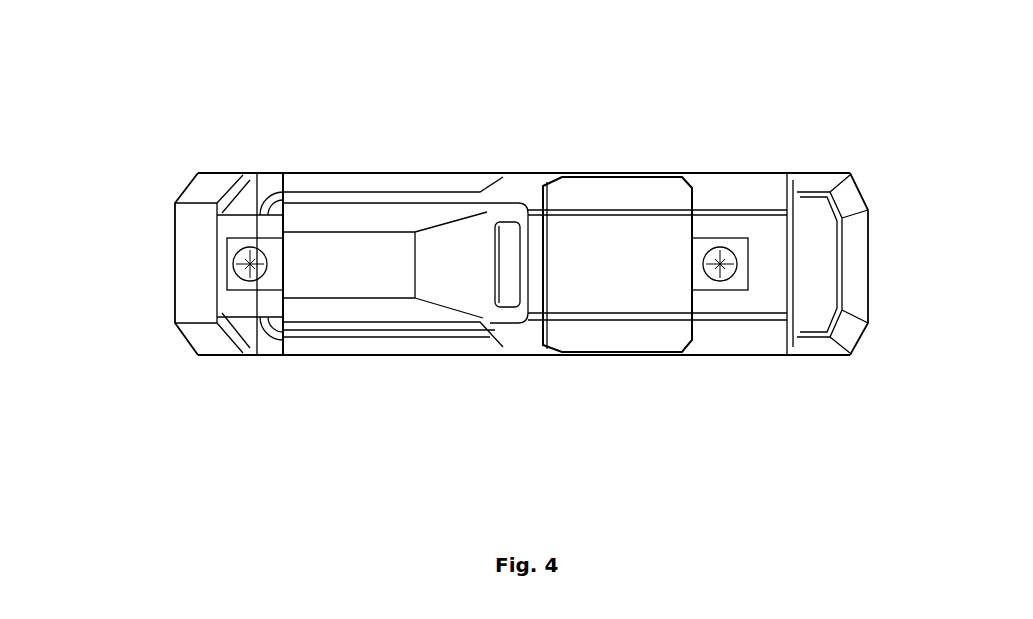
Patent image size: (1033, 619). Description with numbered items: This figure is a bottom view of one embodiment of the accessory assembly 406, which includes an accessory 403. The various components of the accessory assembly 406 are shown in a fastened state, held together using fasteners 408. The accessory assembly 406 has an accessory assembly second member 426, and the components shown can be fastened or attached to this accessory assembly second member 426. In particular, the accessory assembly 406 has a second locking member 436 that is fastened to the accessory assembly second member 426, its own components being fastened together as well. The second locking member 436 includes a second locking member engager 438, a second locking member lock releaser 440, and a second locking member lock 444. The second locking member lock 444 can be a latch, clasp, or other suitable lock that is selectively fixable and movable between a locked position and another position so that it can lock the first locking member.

The accessory assembly 406 is at (110, 105).
The accessory assembly second member 426 is at (258, 190).
The second locking member engager 438 is at (433, 202).
The second locking member lock releaser 440 is at (620, 182).
The fastener 408 is at (735, 258).
The second locking member lock 444 is at (502, 293).
The second locking member 436 is at (533, 332).
The accessory 403 is at (858, 328).